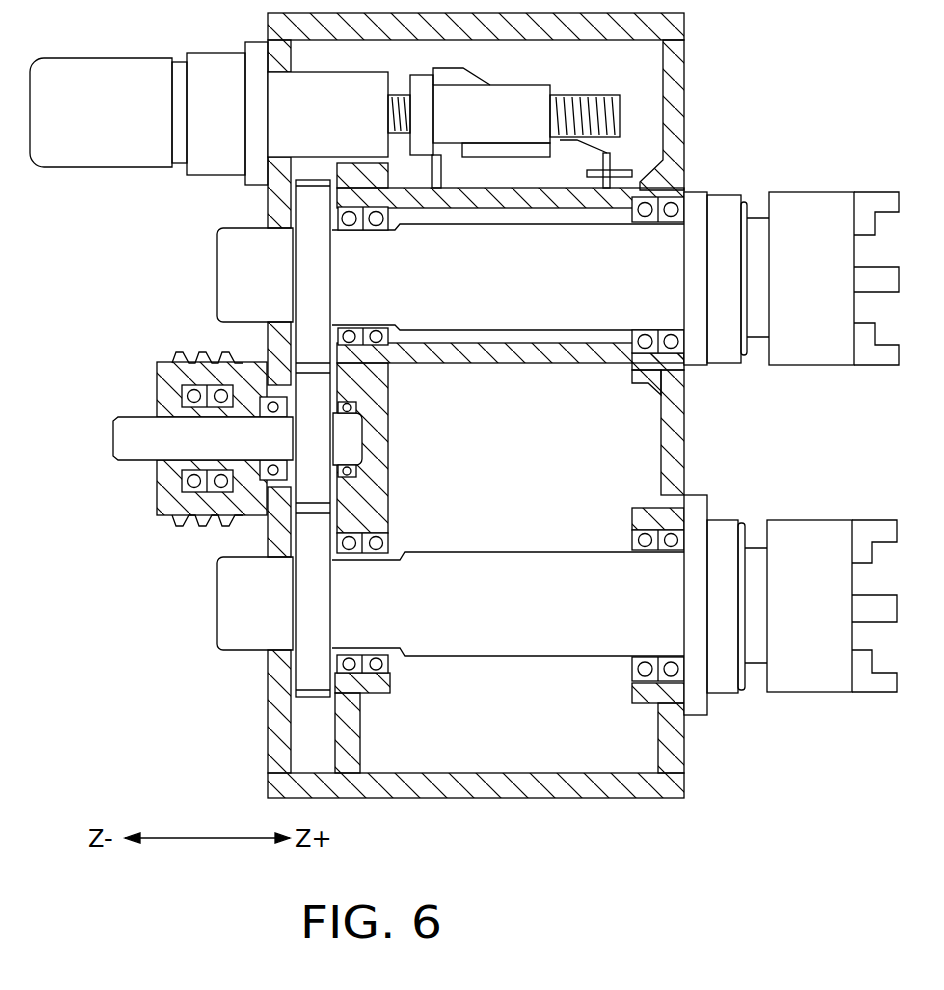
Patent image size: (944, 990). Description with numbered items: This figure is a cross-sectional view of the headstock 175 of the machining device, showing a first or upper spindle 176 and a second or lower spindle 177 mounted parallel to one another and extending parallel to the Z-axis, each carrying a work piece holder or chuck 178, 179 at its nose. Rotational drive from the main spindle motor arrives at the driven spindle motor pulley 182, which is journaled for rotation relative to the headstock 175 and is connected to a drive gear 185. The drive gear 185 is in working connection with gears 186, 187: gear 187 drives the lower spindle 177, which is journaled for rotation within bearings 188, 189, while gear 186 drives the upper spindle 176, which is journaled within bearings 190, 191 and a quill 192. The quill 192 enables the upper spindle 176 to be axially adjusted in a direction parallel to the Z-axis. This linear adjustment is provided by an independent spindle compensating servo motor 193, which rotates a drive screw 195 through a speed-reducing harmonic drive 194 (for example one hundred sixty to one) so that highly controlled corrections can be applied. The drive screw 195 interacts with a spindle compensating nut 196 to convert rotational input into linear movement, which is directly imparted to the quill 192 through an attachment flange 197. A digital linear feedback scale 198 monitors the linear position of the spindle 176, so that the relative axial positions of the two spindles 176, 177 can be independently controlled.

The headstock 175 is at (527, 787).
The spindle 176 is at (818, 200).
The spindle 177 is at (810, 683).
The work piece holder 178 is at (862, 367).
The work piece holder 179 is at (880, 683).
The driven spindle motor pulley 182 is at (190, 524).
The drive gear 185 is at (318, 440).
The gear 186 is at (302, 276).
The gear 187 is at (310, 599).
The bearing 188 is at (389, 670).
The bearing 189 is at (633, 530).
The bearing 190 is at (370, 228).
The bearing 191 is at (686, 352).
The quill 192 is at (541, 351).
The spindle compensating servo motor 193 is at (129, 127).
The harmonic drive 194 is at (339, 127).
The drive screw 195 is at (399, 92).
The spindle compensating nut 196 is at (428, 113).
The attachment flange 197 is at (527, 188).
The digital linear feedback scale 198 is at (603, 190).